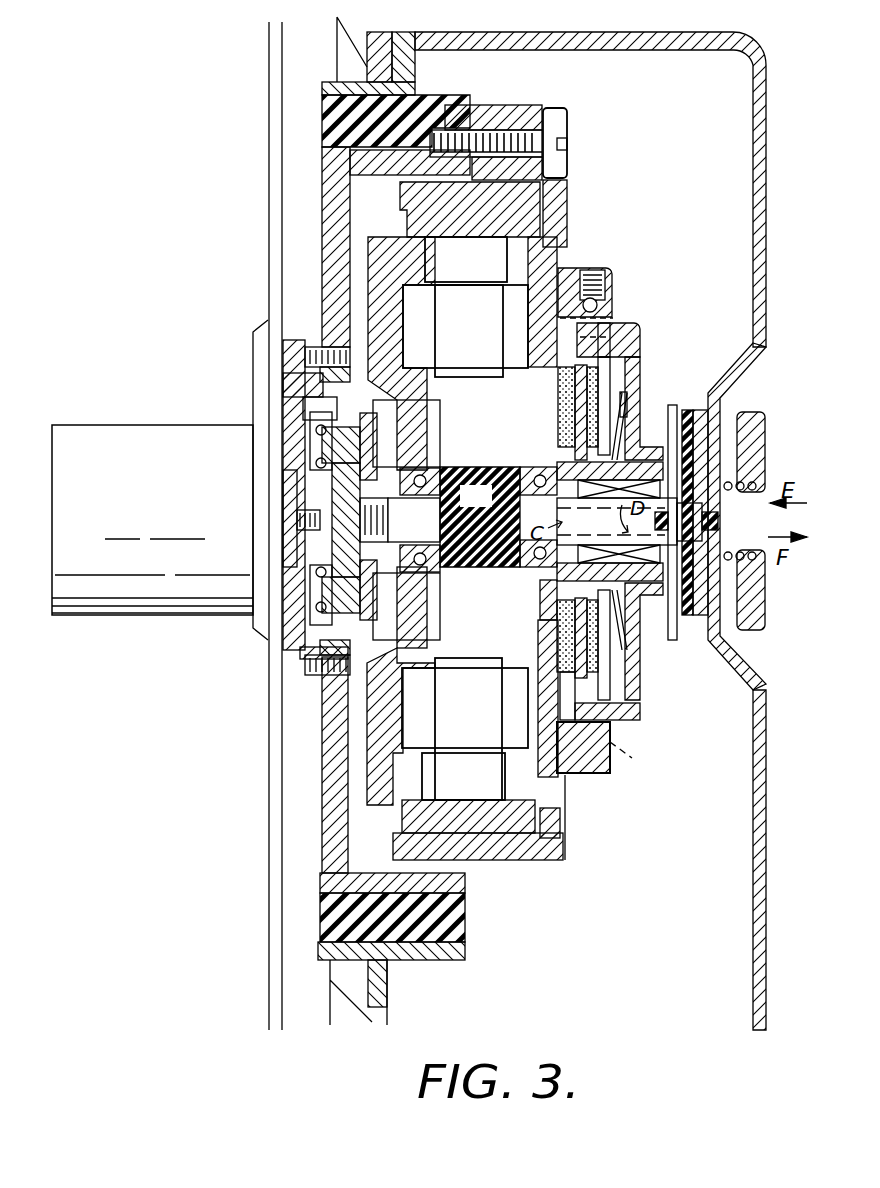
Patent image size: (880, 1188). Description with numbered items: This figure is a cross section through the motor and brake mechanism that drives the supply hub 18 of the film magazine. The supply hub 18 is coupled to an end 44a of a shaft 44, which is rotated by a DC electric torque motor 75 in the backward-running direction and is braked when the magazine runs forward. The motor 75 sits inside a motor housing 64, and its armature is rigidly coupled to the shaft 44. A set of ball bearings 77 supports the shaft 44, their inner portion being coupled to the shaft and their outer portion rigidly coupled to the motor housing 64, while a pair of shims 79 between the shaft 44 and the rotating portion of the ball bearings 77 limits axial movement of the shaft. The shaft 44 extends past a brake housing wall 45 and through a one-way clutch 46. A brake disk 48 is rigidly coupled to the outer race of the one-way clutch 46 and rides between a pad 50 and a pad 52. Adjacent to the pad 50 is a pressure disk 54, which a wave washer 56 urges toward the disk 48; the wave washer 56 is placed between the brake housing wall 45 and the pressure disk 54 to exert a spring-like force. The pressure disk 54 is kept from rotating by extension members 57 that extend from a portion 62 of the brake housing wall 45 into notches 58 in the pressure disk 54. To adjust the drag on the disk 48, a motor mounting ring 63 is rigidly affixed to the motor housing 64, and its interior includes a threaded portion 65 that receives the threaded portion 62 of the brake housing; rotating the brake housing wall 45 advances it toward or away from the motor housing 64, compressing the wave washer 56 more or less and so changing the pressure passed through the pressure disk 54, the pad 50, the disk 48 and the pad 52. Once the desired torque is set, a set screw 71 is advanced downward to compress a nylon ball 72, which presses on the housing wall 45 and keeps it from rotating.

The supply hub 18 is at (168, 590).
The shaft 44 is at (560, 468).
The end of shaft 44a is at (436, 533).
The brake housing wall 45 is at (647, 333).
The one-way clutch 46 is at (600, 576).
The disk 48 is at (577, 383).
The pad 50 is at (590, 420).
The pad 52 is at (633, 357).
The pressure disk 54 is at (605, 668).
The wave washer 56 is at (622, 632).
The extension members 57 is at (618, 350).
The notches 58 is at (600, 697).
The portion of brake housing wall 62 is at (598, 715).
The motor mounting ring 63 is at (590, 765).
The motor housing 64 is at (533, 833).
The threaded portion 65 is at (641, 759).
The set screw 71 is at (600, 242).
The nylon ball 72 is at (612, 285).
The DC electric torque motor 75 is at (477, 738).
The ball bearings 77 is at (527, 552).
The shims 79 is at (455, 493).